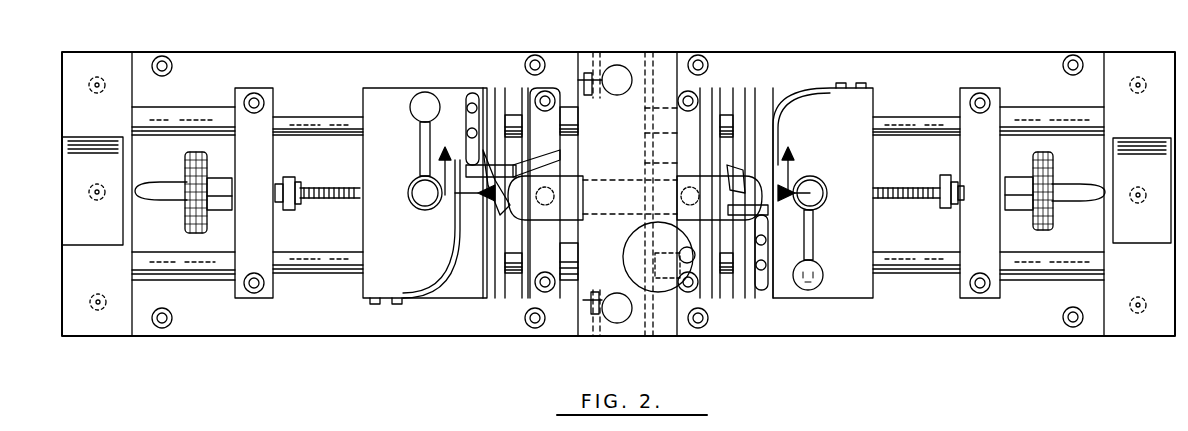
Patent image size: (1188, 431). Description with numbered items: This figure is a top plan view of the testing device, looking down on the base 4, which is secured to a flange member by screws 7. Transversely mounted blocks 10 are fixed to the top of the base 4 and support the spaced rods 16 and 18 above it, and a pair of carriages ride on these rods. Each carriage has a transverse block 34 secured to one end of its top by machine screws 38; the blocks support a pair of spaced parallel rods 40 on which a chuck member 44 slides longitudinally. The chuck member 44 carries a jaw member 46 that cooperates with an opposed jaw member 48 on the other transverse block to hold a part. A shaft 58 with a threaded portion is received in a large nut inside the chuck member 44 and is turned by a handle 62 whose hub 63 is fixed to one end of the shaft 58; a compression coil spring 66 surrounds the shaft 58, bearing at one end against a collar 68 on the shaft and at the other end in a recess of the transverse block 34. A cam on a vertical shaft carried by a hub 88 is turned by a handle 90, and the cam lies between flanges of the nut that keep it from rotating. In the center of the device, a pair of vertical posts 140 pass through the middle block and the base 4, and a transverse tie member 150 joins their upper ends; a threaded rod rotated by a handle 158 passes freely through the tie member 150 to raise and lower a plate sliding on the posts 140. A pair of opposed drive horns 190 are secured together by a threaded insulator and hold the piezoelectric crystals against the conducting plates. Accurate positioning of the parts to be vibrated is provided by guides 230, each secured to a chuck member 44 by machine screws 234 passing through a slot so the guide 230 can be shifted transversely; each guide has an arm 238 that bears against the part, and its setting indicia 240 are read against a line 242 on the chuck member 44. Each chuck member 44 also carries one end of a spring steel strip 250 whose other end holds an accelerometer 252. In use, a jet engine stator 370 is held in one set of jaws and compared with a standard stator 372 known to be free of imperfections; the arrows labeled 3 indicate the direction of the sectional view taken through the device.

The section arrow 3 is at (617, 160).
The base 4 is at (255, 325).
The screws 7 is at (166, 57).
The transversely mounted block 10 is at (98, 60).
The rod 16 is at (190, 266).
The rod 18 is at (188, 120).
The transverse block 34 is at (240, 170).
The machine screws 38 is at (258, 95).
The spaced parallel rods 40 is at (325, 117).
The chuck member 44 is at (402, 155).
The jaw member 46 is at (497, 293).
The opposed jaw member 48 is at (525, 293).
The shaft 58 is at (322, 188).
The handle 62 is at (154, 197).
The hub 63 is at (208, 220).
The compression coil spring 66 is at (280, 190).
The collar 68 is at (289, 208).
The hub 88 is at (415, 208).
The handle 90 is at (426, 94).
The vertical posts 140 is at (622, 67).
The transverse tie member 150 is at (602, 140).
The handle 158 is at (680, 250).
The drive horns 190 is at (700, 182).
The guide 230 is at (468, 100).
The machine screws 234 is at (476, 110).
The arm 238 is at (540, 140).
The setting indicia 240 is at (470, 115).
The line 242 is at (466, 135).
The spring steel strip 250 is at (452, 262).
The accelerometer 252 is at (487, 197).
The stator 370 is at (497, 215).
The stator 372 is at (740, 170).